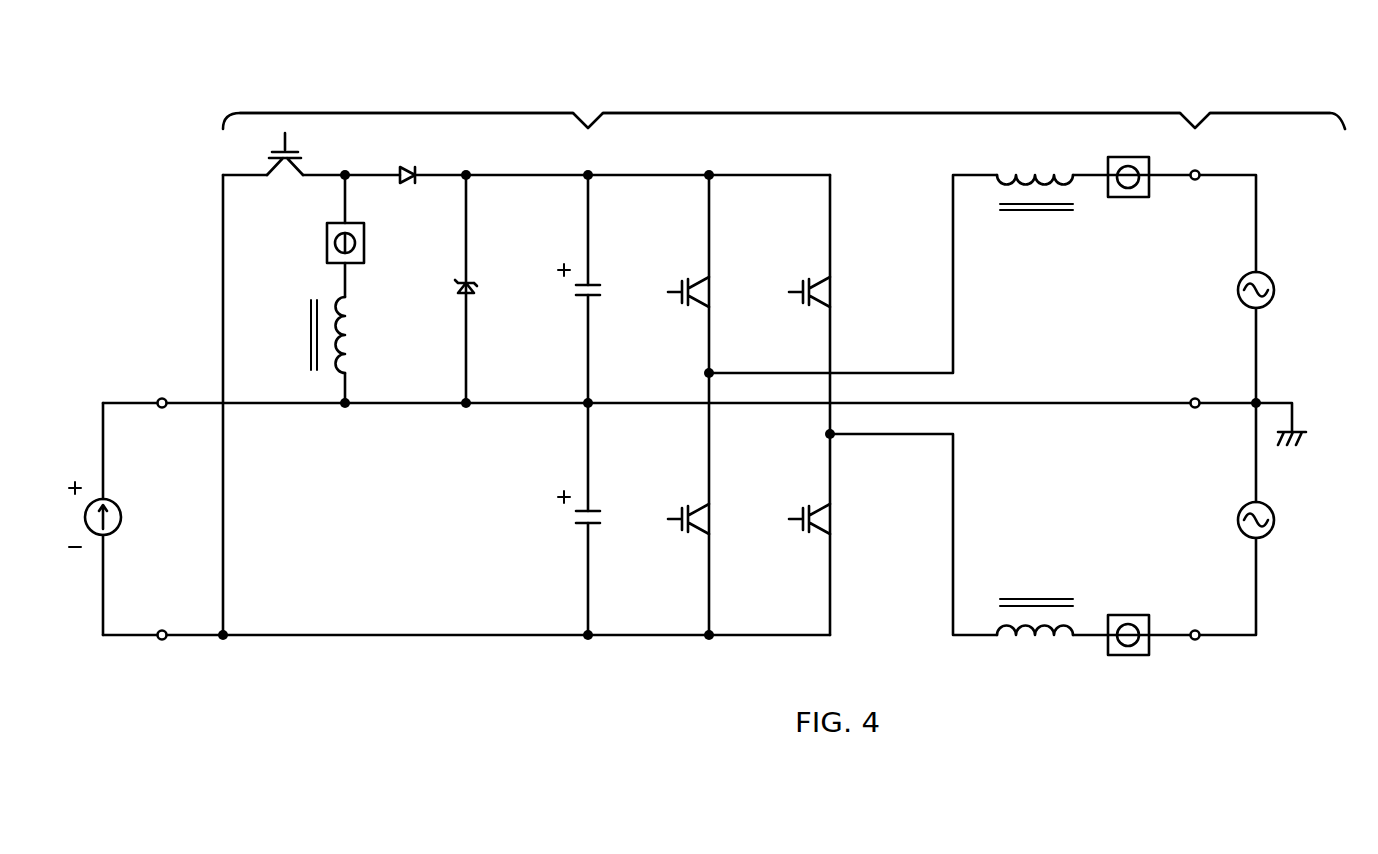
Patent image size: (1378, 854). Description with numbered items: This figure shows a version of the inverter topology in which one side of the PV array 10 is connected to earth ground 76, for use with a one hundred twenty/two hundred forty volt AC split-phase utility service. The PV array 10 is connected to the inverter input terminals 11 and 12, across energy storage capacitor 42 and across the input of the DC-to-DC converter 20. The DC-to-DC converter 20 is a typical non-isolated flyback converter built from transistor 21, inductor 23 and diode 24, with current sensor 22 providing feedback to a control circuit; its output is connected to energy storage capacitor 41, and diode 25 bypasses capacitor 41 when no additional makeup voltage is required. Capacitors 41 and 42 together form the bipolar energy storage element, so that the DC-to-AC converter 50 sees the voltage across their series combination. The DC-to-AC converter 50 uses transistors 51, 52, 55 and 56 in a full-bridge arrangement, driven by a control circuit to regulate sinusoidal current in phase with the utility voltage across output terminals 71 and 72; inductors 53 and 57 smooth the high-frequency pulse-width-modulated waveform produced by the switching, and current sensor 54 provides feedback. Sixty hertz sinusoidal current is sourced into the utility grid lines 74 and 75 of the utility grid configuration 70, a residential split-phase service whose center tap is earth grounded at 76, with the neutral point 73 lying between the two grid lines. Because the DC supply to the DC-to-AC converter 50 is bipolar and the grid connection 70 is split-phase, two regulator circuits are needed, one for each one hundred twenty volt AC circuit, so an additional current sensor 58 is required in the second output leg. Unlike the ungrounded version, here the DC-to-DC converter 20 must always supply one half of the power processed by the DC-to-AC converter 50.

The PV array 10 is at (114, 514).
The inverter input terminal 11 is at (161, 421).
The inverter input terminal 12 is at (163, 618).
The DC-to-DC converter 20 is at (406, 80).
The transistor 21 is at (285, 173).
The current sensor 22 is at (325, 243).
The inductor 23 is at (349, 335).
The diode 24 is at (407, 195).
The diode 25 is at (486, 292).
The energy storage capacitor 41 is at (595, 286).
The energy storage capacitor 42 is at (598, 514).
The DC-to-AC converter 50 is at (891, 80).
The transistor 51 is at (707, 290).
The transistor 52 is at (709, 520).
The inductor 53 is at (1035, 211).
The current sensor 54 is at (1128, 194).
The transistor 55 is at (829, 290).
The transistor 56 is at (829, 520).
The inductor 57 is at (1035, 600).
The current sensor 58 is at (1128, 619).
The utility grid configuration 70 is at (1268, 80).
The output terminal 71 is at (1194, 193).
The output terminal 72 is at (1197, 618).
The neutral terminal 73 is at (1197, 387).
The utility grid line 74 is at (1277, 291).
The utility grid line 75 is at (1277, 520).
The earth-grounded center-tap 76 is at (1300, 430).